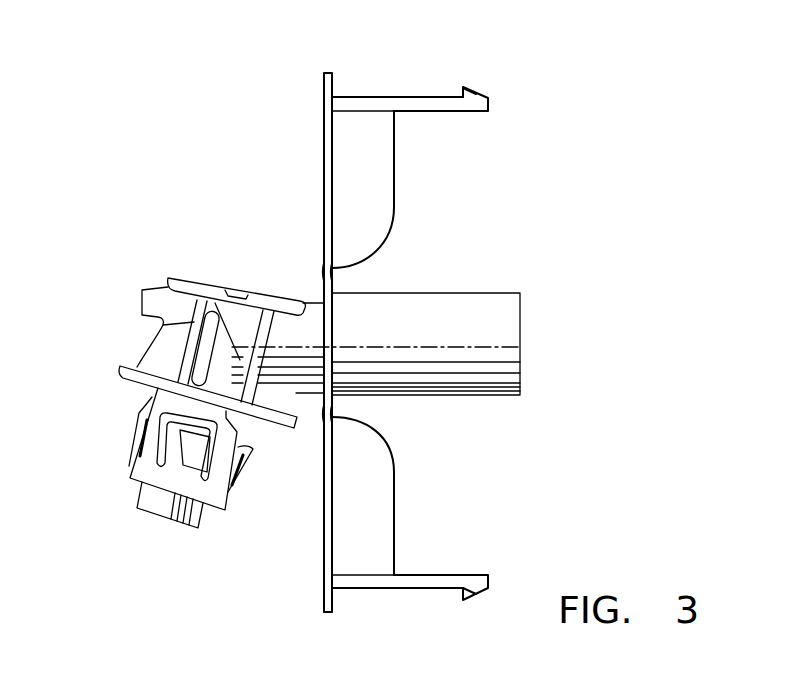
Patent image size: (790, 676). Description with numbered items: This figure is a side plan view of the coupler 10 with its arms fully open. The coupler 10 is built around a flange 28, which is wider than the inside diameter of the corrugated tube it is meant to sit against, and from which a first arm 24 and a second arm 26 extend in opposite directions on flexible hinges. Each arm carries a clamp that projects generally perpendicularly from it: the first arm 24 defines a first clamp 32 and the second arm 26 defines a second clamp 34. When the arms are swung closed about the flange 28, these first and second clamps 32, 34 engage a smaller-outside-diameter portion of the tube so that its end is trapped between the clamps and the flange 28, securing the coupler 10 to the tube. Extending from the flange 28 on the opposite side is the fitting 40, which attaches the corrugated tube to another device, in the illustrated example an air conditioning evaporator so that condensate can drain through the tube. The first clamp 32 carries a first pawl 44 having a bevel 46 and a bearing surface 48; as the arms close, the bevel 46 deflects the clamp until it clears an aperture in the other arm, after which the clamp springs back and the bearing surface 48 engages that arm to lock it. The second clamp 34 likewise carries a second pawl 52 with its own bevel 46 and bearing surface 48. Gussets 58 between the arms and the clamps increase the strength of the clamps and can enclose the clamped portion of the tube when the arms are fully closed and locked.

The coupler 10 is at (152, 56).
The first arm 24 is at (322, 148).
The second arm 26 is at (323, 557).
The flange 28 is at (340, 311).
The first clamp 32 is at (375, 102).
The second clamp 34 is at (410, 585).
The fitting 40 is at (507, 313).
The first pawl 44 is at (478, 112).
The bevel 46 is at (480, 91).
The bearing surface 48 is at (463, 89).
The second pawl 52 is at (480, 582).
The gussets 58 is at (373, 172).